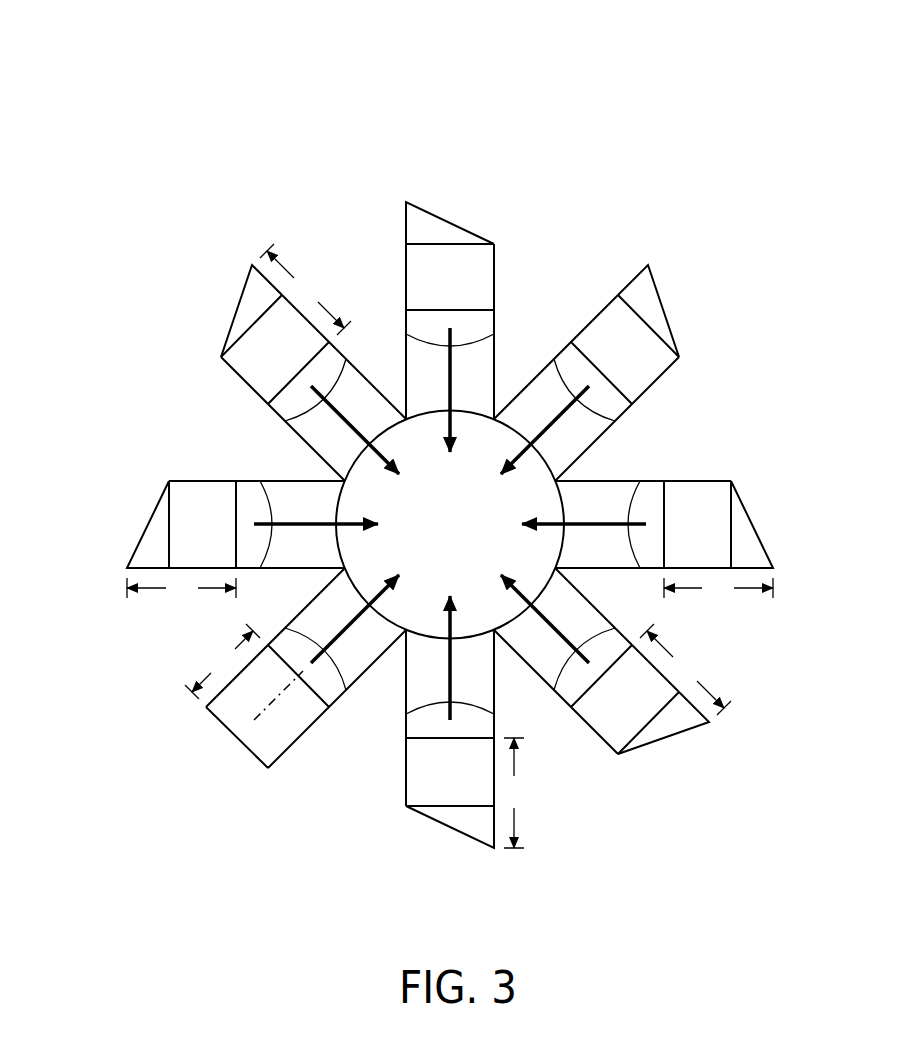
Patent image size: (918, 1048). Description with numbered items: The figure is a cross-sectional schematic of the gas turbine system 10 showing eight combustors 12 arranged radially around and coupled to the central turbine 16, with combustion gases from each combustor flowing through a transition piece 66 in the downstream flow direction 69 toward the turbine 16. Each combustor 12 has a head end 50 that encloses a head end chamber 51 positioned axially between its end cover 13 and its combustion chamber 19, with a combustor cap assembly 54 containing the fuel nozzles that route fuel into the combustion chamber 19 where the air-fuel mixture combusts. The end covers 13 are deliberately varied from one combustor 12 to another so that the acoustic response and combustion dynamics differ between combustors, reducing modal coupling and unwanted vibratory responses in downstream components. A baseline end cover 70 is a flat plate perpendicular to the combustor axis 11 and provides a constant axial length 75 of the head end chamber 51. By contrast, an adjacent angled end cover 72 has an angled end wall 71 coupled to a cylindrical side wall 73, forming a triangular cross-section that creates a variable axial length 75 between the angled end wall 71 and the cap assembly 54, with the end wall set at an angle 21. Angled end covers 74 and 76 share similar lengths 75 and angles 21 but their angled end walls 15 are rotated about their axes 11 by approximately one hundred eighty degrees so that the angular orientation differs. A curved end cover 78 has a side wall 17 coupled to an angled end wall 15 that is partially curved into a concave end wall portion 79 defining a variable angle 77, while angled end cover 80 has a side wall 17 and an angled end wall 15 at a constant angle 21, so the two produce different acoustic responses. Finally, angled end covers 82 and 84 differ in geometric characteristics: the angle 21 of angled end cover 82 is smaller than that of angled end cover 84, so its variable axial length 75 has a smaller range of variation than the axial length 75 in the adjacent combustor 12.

The gas turbine system 10 is at (706, 70).
The axis 11 is at (252, 756).
The combustor 12 is at (462, 158).
The end cover 13 is at (297, 250).
The angled end wall 15 is at (478, 233).
The turbine 16 is at (438, 537).
The side wall 17 is at (411, 210).
The combustion chamber 19 is at (456, 391).
The angle 21 is at (427, 240).
The head end 50 is at (505, 267).
The head end chamber 51 is at (438, 291).
The combustor cap assembly 54 is at (498, 313).
The transition piece 66 is at (415, 393).
The downstream flow direction 69 is at (512, 452).
The baseline end cover 70 is at (280, 765).
The angled end wall 71 is at (440, 824).
The angled end cover 72 is at (473, 845).
The cylindrical side wall 73 is at (488, 838).
The angled end cover 74 is at (703, 724).
The axial length 75 is at (450, 546).
The angled end cover 76 is at (750, 521).
The variable angle 77 is at (637, 305).
The curved end cover 78 is at (667, 326).
The concave end wall portion 79 is at (645, 295).
The angled end cover 80 is at (450, 218).
The angled end cover 82 is at (252, 302).
The angled end cover 84 is at (129, 566).